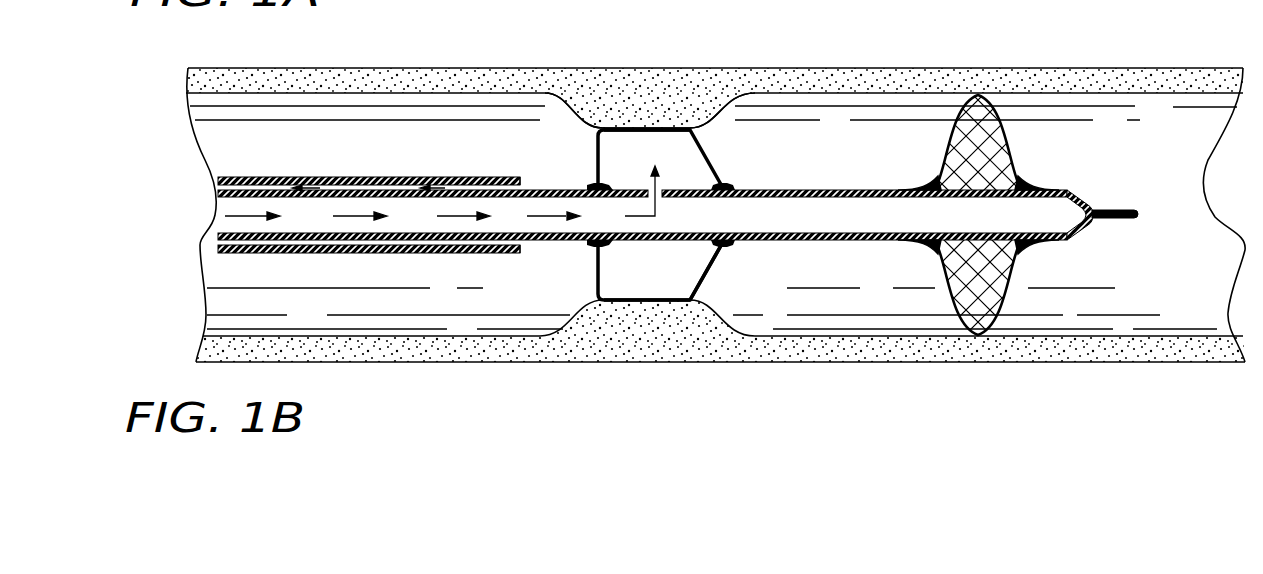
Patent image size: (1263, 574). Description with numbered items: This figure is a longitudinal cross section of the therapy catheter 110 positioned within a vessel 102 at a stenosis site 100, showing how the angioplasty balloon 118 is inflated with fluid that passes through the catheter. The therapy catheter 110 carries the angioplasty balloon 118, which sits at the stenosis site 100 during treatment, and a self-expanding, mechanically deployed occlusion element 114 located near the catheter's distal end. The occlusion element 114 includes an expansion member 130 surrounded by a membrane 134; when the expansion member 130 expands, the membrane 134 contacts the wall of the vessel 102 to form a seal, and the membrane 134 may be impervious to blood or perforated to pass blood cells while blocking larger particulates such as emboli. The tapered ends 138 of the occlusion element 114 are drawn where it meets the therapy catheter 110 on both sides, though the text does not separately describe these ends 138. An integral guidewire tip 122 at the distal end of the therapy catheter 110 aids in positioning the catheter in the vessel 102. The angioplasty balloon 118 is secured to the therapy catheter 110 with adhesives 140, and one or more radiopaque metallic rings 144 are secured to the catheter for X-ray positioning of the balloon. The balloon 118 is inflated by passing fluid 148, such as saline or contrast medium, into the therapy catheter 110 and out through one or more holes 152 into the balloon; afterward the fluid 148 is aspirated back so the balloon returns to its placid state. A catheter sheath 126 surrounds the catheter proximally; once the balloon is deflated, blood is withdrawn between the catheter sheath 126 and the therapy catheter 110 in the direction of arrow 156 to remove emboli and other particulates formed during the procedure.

The stenosis site 100 is at (657, 92).
The vessel 102 is at (373, 68).
The therapy catheter 110 is at (836, 175).
The occlusion element 114 is at (1025, 137).
The angioplasty balloon 118 is at (710, 278).
The guidewire tip 122 is at (1140, 220).
The catheter sheath 126 is at (275, 177).
The expansion member 130 is at (990, 160).
The membrane 134 is at (945, 150).
The balloon tapered end 138 is at (935, 185).
The adhesives 140 is at (594, 183).
The radiopaque metallic rings 144 is at (712, 245).
The fluid 148 is at (359, 216).
The holes 152 is at (660, 197).
The arrow 156 is at (538, 185).